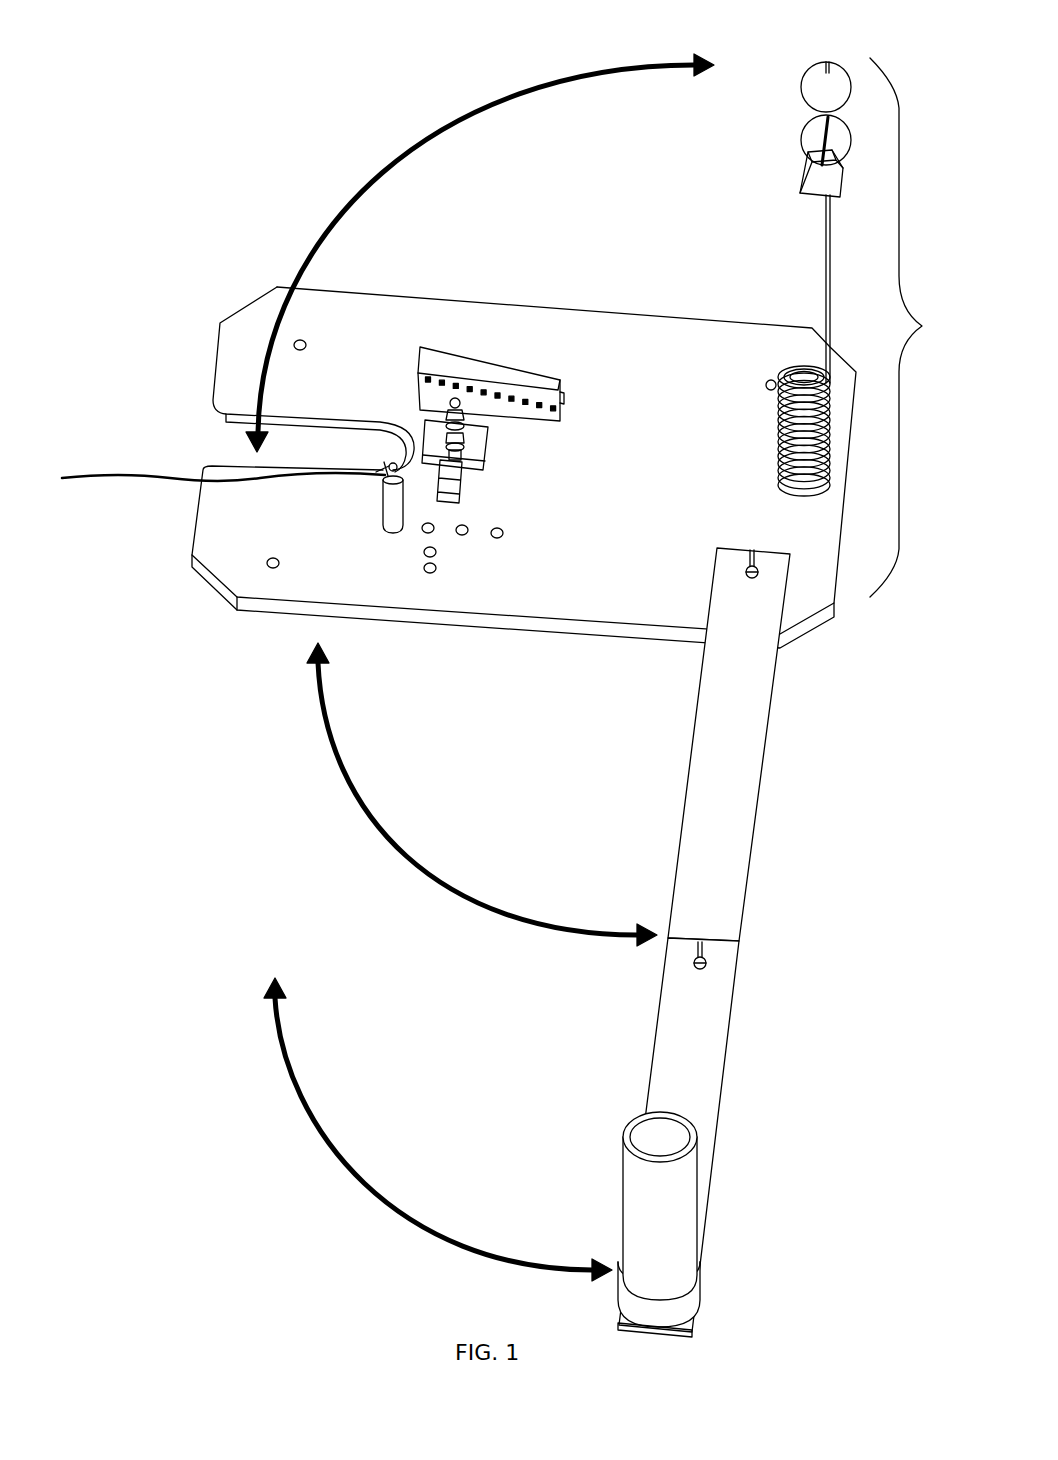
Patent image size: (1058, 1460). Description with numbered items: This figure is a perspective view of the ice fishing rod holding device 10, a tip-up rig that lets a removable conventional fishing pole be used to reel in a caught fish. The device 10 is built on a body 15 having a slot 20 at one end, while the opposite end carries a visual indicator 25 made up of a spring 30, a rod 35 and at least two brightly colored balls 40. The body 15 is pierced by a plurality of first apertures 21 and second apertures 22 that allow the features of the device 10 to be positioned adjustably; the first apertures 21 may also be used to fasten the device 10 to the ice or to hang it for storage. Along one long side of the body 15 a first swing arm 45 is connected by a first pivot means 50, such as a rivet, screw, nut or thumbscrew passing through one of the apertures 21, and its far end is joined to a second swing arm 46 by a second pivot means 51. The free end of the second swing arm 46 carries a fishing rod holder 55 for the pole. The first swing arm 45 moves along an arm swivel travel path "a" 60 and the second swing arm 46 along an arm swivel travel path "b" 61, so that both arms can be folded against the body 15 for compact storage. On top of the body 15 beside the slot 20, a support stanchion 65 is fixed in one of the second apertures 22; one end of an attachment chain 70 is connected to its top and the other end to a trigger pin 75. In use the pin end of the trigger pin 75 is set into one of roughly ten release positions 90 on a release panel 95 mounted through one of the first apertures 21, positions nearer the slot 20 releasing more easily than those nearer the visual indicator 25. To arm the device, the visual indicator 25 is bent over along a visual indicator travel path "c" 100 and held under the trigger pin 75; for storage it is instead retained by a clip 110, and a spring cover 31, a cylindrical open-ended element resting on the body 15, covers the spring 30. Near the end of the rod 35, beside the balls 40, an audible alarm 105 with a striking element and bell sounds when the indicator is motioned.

The ice fishing rod holding device 10 is at (122, 196).
The body 15 is at (808, 538).
The slot 20 is at (240, 456).
The first apertures 21 is at (305, 343).
The second apertures 22 is at (496, 538).
The visual indicator 25 is at (926, 331).
The spring 30 is at (780, 370).
The spring cover 31 is at (675, 1203).
The rod 35 is at (825, 273).
The balls 40 is at (817, 88).
The first swing arm 45 is at (725, 782).
The second swing arm 46 is at (678, 1065).
The first pivot means 50 is at (756, 578).
The second pivot means 51 is at (694, 964).
The fishing rod holder 55 is at (690, 1297).
The arm swivel travel path "a" 60 is at (470, 898).
The arm swivel travel path "b" 61 is at (427, 1227).
The support stanchion 65 is at (383, 516).
The attachment chain 70 is at (385, 466).
The trigger pin 75 is at (340, 470).
The release positions 90 is at (445, 387).
The release panel 95 is at (452, 363).
The visual indicator travel path "c" 100 is at (480, 102).
The audible alarm 105 is at (815, 178).
The clip 110 is at (433, 447).